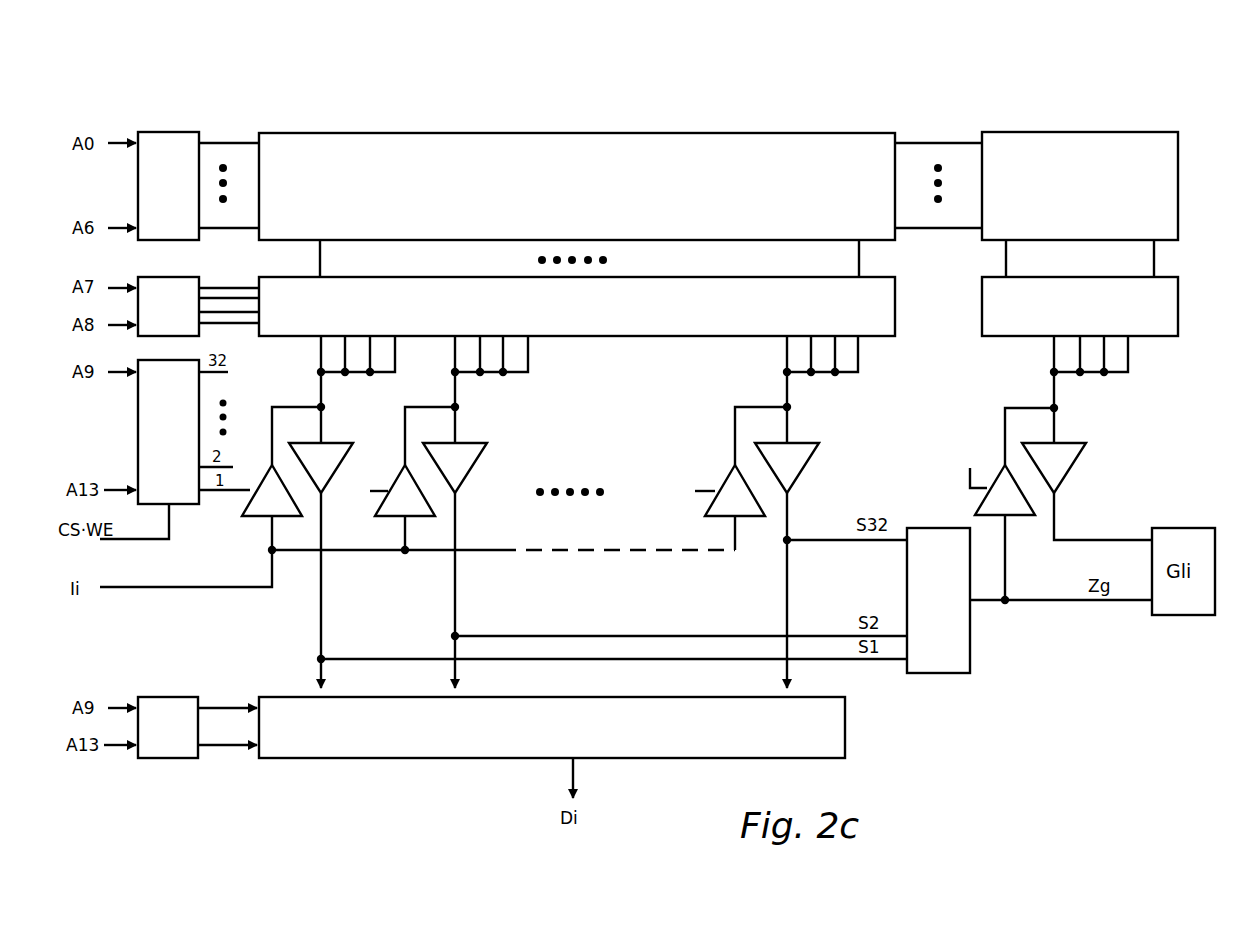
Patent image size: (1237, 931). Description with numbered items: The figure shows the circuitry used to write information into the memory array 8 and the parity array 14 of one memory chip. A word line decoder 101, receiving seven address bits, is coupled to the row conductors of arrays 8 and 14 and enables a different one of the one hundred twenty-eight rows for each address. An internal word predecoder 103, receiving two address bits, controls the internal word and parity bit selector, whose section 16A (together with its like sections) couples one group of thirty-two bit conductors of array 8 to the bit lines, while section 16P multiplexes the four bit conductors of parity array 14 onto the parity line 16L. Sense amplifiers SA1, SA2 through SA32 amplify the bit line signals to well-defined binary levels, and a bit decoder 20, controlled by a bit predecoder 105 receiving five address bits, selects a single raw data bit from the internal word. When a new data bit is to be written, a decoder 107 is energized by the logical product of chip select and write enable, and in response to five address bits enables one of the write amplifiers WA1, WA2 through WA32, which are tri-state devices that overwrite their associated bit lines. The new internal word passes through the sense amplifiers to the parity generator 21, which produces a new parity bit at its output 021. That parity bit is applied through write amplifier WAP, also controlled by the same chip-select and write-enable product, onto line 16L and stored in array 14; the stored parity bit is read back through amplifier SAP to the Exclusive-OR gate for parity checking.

The word line decoder 101 is at (148, 142).
The internal word predecoder 103 is at (148, 292).
The decoder 107 is at (168, 432).
The bit predecoder 105 is at (168, 727).
The memory array 8 is at (648, 140).
The parity array 14 is at (1055, 142).
The section of internal word and parity bit selector 16A is at (577, 306).
The section of internal word and parity bit selector 16P is at (1080, 306).
The parity line 16L is at (1056, 392).
The bit decoder 20 is at (354, 744).
The parity generator 21 is at (950, 657).
The output of parity generator 021 is at (972, 604).
The sense amplifier SA1 is at (322, 466).
The sense amplifier SA2 is at (456, 466).
The sense amplifier SA32 is at (788, 470).
The amplifier SAP is at (1056, 468).
The write amplifier WA1 is at (264, 503).
The write amplifier WA2 is at (397, 503).
The write amplifier WA32 is at (720, 503).
The write amplifier WAP is at (985, 500).